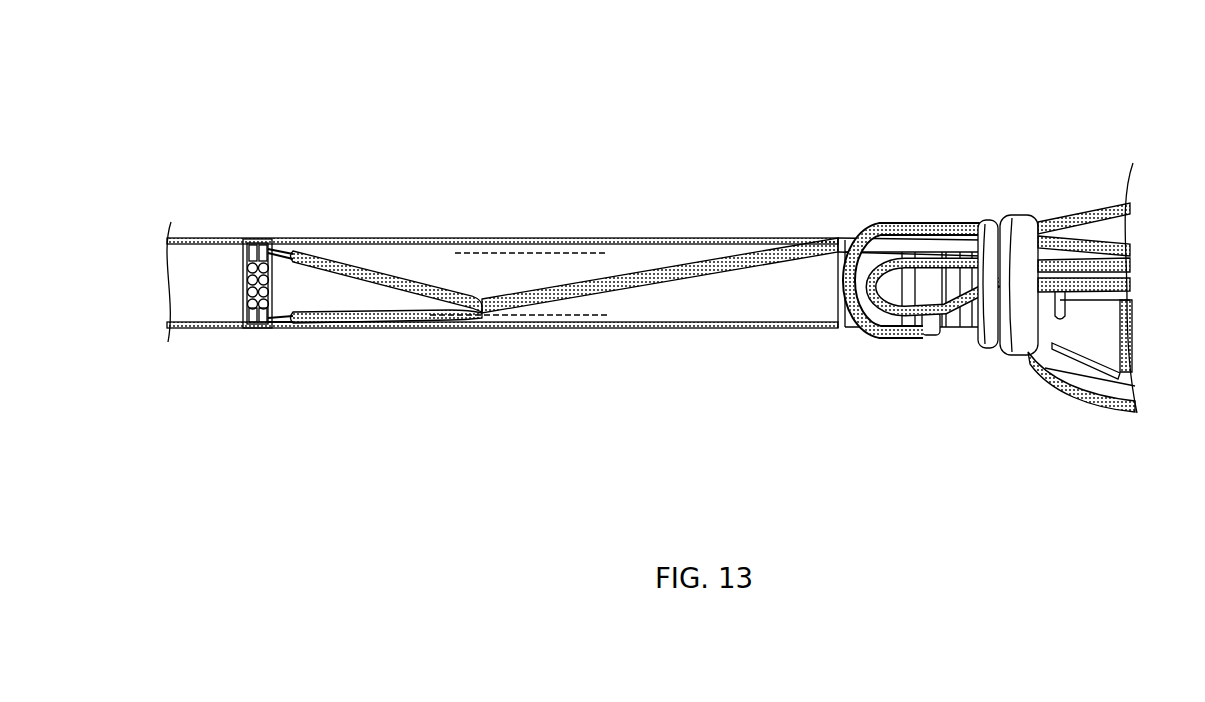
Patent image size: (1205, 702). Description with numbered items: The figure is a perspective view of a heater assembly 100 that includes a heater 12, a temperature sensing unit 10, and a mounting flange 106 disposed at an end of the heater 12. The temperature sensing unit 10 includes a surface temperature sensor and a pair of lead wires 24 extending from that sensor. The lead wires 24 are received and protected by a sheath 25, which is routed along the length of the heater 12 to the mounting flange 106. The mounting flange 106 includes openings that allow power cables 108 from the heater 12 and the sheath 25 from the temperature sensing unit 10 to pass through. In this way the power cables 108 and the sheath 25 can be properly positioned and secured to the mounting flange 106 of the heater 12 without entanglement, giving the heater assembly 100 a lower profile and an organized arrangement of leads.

The temperature sensing unit 10 is at (256, 212).
The heater 12 is at (368, 220).
The lead wires 24 is at (442, 293).
The sheath 25 is at (627, 285).
The heater assembly 100 is at (810, 68).
The mounting flange 106 is at (990, 220).
The power cables 108 is at (890, 341).